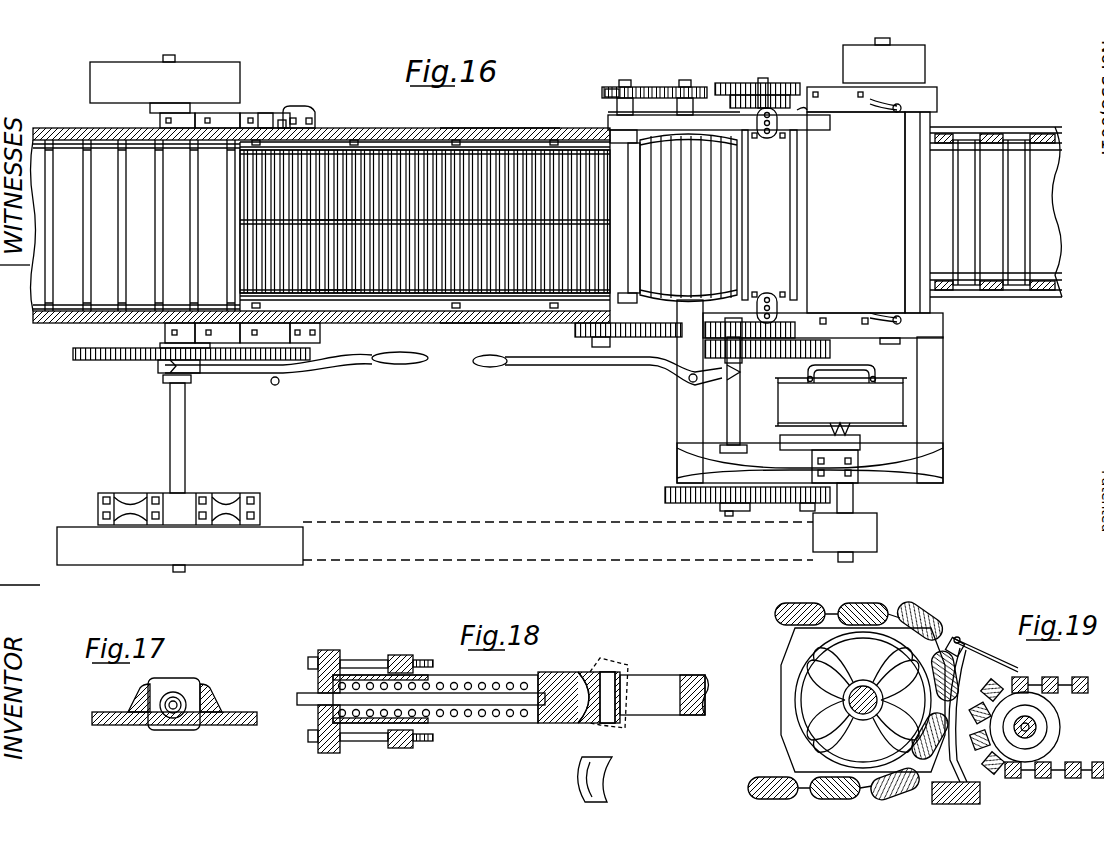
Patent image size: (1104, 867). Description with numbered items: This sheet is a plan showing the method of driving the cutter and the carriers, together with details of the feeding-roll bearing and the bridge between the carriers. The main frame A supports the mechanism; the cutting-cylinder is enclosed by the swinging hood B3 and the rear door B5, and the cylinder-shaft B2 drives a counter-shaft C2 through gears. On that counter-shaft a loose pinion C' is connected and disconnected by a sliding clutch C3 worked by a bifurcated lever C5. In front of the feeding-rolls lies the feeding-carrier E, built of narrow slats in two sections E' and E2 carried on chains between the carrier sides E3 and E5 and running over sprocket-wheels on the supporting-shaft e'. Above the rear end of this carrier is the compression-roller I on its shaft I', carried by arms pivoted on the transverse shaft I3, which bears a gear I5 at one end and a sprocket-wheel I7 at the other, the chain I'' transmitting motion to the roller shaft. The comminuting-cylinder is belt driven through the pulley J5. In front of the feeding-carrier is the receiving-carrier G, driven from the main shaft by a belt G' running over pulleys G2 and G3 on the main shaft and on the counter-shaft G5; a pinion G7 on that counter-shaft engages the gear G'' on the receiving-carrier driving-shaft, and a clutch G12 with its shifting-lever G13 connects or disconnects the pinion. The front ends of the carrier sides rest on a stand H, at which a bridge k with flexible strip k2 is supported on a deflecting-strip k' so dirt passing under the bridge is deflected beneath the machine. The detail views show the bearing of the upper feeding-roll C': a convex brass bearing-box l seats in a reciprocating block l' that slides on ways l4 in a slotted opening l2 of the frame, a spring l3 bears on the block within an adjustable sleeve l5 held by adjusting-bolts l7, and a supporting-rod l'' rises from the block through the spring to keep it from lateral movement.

In FIG. 16, the main frame A is at (806, 285).
In FIG. 16, the sliding box B' is at (841, 430).
In FIG. 16, the cylinder-shaft B2 is at (860, 368).
In FIG. 16, the swinging hood B3 is at (867, 205).
In FIG. 16, the rear door B5 is at (925, 152).
In FIG. 16, the upper feeding-roll C' is at (739, 347).
In FIG. 16, the counter-shaft C2 is at (758, 406).
In FIG. 16, the sliding clutch C3 is at (742, 372).
In FIG. 16, the bifurcated lever C5 is at (606, 364).
In FIG. 16, the feeding-carrier E is at (425, 225).
In FIG. 19, the feeding-carrier E is at (1036, 727).
In FIG. 16, the feeding-carrier section E' is at (330, 269).
In FIG. 16, the feeding-carrier section E2 is at (345, 198).
In FIG. 16, the carrier side E3 is at (470, 320).
In FIG. 16, the carrier side E5 is at (498, 128).
In FIG. 16, the receiving-carrier G is at (558, 530).
In FIG. 19, the receiving-carrier G is at (854, 694).
In FIG. 16, the belt G' is at (321, 225).
In FIG. 16, the rack G'' is at (179, 347).
In FIG. 16, the pulley G2 is at (845, 522).
In FIG. 16, the pulley G3 is at (180, 549).
In FIG. 16, the counter-shaft G5 is at (180, 455).
In FIG. 16, the pinion G7 is at (160, 364).
In FIG. 16, the clutch G12 is at (164, 384).
In FIG. 16, the shifting-lever G13 is at (344, 374).
In FIG. 16, the stand H is at (308, 110).
In FIG. 16, the compression-roller I is at (688, 218).
In FIG. 16, the shaft I' is at (744, 77).
In FIG. 16, the sprocket chain I'' is at (654, 85).
In FIG. 16, the transverse shaft I3 is at (628, 165).
In FIG. 16, the gear I5 is at (578, 328).
In FIG. 16, the sprocket-wheel I7 is at (612, 90).
In FIG. 16, the pulley J5 is at (884, 60).
In FIG. 16, the supporting-shaft e' is at (193, 91).
In FIG. 19, the supporting-shaft e' is at (1060, 744).
In FIG. 19, the bridge k is at (899, 699).
In FIG. 19, the deflecting-strip k' is at (966, 666).
In FIG. 19, the flexible strip k2 is at (958, 636).
In FIG. 17, the bearing-box l is at (171, 685).
In FIG. 18, the bearing-box l is at (603, 718).
In FIG. 18, the reciprocating block l' is at (576, 719).
In FIG. 17, the rod l'' is at (159, 735).
In FIG. 18, the rod l'' is at (406, 734).
In FIG. 18, the slotted opening l2 is at (440, 680).
In FIG. 17, the spring l3 is at (180, 698).
In FIG. 18, the spring l3 is at (450, 722).
In FIG. 17, the ways l4 is at (136, 707).
In FIG. 18, the adjustable tube or sleeve l5 is at (380, 720).
In FIG. 18, the adjusting-bolts l7 is at (355, 660).